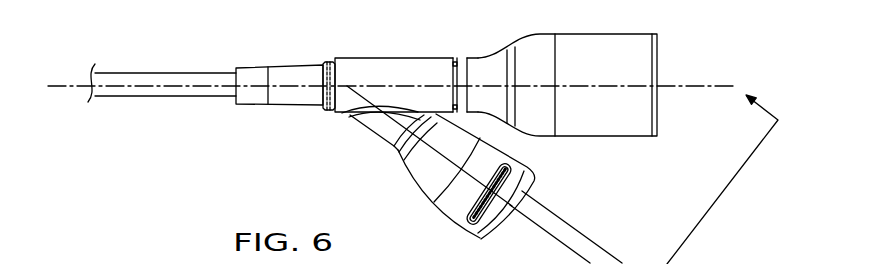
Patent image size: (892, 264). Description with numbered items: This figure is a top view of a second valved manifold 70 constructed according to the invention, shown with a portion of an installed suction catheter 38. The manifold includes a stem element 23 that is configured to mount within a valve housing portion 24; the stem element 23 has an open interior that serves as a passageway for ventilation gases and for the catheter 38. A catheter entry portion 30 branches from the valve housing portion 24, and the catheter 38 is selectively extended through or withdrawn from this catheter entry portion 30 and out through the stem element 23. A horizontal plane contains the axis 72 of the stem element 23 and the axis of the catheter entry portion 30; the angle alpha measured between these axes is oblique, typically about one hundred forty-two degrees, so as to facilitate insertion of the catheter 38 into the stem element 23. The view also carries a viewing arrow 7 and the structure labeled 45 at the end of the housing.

The section view arrow 7 is at (722, 165).
The stem element 23 is at (298, 78).
The valve housing portion 24 is at (405, 68).
The catheter entry portion 30 is at (525, 173).
The suction catheter 38 is at (143, 80).
The flared housing end 45 is at (660, 62).
The second valved manifold 70 is at (213, 147).
The axis of stem element 72 is at (63, 83).